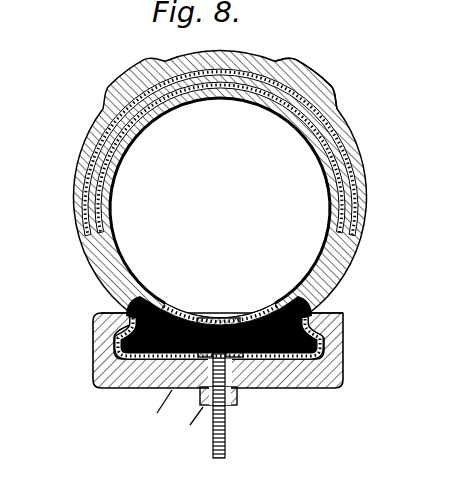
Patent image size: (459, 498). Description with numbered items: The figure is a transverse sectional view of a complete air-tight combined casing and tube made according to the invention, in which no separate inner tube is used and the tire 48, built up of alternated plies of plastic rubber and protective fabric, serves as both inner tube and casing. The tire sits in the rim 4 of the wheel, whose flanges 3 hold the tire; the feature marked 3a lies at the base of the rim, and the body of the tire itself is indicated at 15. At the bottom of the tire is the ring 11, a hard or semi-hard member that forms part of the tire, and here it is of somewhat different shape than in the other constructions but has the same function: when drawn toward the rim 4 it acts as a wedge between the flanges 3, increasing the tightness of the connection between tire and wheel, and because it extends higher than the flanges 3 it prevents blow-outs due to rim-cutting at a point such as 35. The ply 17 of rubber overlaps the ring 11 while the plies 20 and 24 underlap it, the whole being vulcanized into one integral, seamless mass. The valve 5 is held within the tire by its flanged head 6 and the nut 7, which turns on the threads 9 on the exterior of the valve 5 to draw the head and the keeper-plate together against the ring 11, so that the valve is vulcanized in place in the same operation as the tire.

The flanges 3 is at (100, 313).
The base extension 3a is at (177, 436).
The rim 4 is at (337, 350).
The valve 5 is at (242, 441).
The flanged head 6 is at (218, 321).
The nut 7 is at (233, 340).
The threads 9 is at (368, 13).
The ring 11 is at (113, 352).
The ring body 15 is at (100, 144).
The ply 17 is at (328, 164).
The ply 20 is at (96, 188).
The ply 24 is at (250, 68).
The point of wall thinning 35 is at (135, 312).
The tire 48 is at (340, 115).